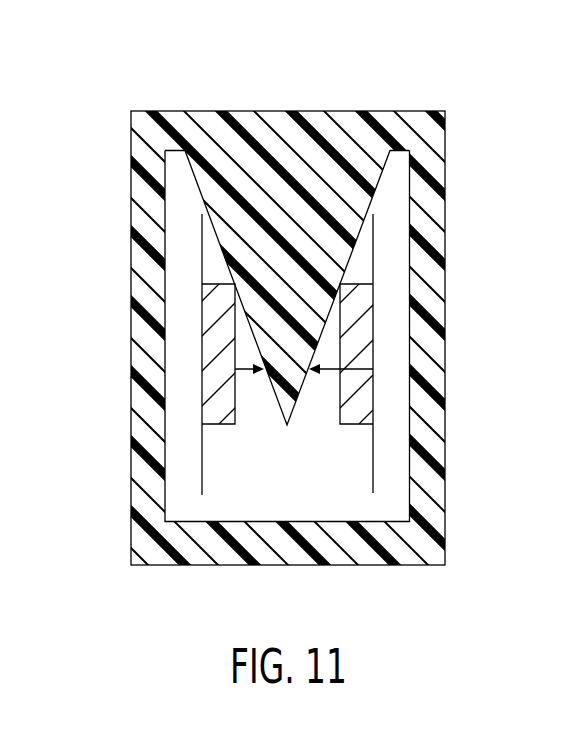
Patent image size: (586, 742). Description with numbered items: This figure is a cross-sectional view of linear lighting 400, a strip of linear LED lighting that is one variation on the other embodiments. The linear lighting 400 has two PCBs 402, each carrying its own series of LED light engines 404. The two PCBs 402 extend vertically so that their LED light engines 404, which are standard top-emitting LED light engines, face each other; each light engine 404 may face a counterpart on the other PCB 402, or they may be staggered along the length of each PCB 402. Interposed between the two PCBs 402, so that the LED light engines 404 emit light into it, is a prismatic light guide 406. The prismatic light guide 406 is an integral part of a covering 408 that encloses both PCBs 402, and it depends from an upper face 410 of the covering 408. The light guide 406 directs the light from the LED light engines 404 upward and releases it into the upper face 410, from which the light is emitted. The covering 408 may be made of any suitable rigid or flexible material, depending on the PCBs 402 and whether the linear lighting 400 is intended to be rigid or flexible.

The linear lighting 400 is at (428, 76).
The PCB 402 is at (202, 476).
The LED light engine 404 is at (237, 395).
The prismatic light guide 406 is at (213, 194).
The covering 408 is at (122, 354).
The upper face 410 is at (206, 125).